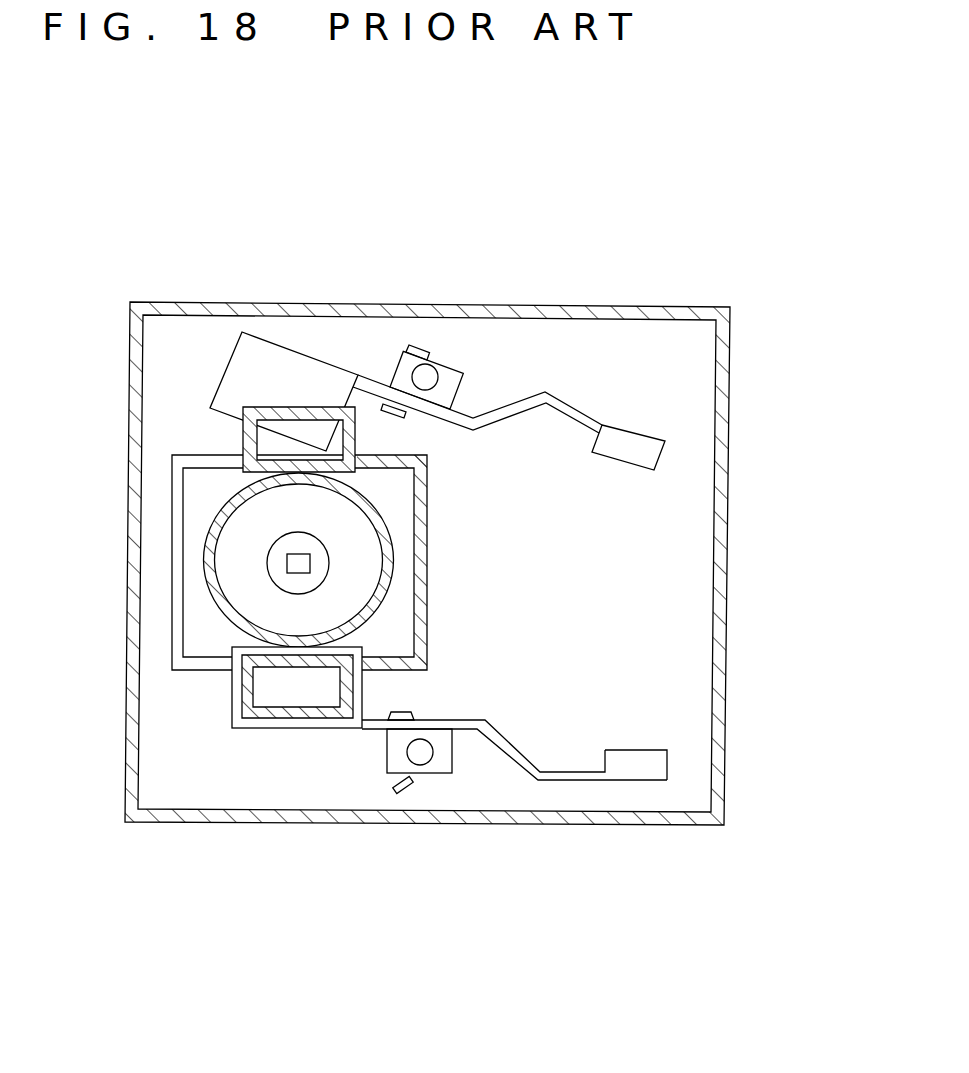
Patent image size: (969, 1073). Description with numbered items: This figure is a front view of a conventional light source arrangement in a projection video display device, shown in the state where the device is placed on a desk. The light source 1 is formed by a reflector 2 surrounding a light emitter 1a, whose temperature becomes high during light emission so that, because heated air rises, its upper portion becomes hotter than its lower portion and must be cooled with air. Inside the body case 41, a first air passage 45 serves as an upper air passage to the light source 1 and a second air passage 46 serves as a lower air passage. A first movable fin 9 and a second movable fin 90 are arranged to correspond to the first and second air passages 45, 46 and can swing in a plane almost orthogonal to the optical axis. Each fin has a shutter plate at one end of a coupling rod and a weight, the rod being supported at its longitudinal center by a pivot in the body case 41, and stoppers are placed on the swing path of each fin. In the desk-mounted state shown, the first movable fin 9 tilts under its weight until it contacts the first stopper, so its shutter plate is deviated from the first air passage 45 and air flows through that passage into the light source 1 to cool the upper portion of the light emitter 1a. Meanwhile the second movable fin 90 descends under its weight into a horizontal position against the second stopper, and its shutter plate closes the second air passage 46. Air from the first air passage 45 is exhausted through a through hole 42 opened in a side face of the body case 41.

The body case 41 is at (731, 361).
The through hole 42 is at (131, 620).
The light source 1 is at (209, 552).
The reflector 2 is at (217, 510).
The light emitter 1a is at (278, 558).
The first air passage 45 is at (257, 448).
The second air passage 46 is at (260, 697).
The first movable fin 9 is at (509, 337).
The second movable fin 90 is at (514, 825).